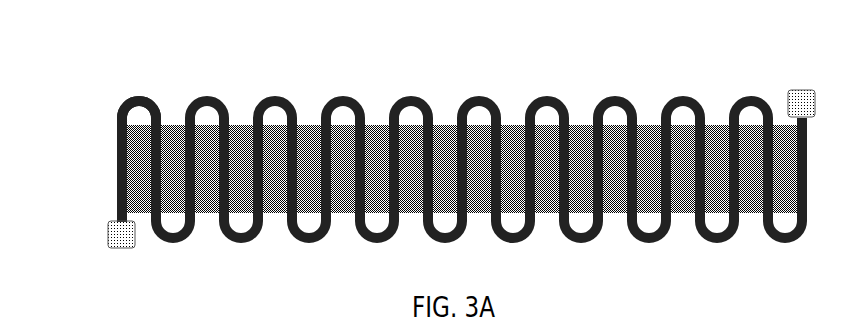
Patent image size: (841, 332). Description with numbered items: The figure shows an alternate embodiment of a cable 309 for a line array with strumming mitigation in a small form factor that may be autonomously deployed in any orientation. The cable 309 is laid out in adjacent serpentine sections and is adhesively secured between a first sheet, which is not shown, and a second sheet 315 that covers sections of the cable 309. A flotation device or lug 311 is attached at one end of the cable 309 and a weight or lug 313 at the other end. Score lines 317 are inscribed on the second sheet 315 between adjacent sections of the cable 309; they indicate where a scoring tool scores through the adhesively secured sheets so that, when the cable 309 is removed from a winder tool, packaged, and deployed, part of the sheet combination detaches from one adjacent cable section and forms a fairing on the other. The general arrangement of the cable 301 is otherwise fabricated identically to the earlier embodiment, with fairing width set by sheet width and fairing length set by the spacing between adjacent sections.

The serpentine wire / conductor 301 is at (118, 168).
The cable 309 is at (118, 105).
The flotation device or lug 311 is at (122, 248).
The weight or lug 313 is at (802, 90).
The second sheet 315 is at (118, 206).
The score line 317 is at (150, 133).